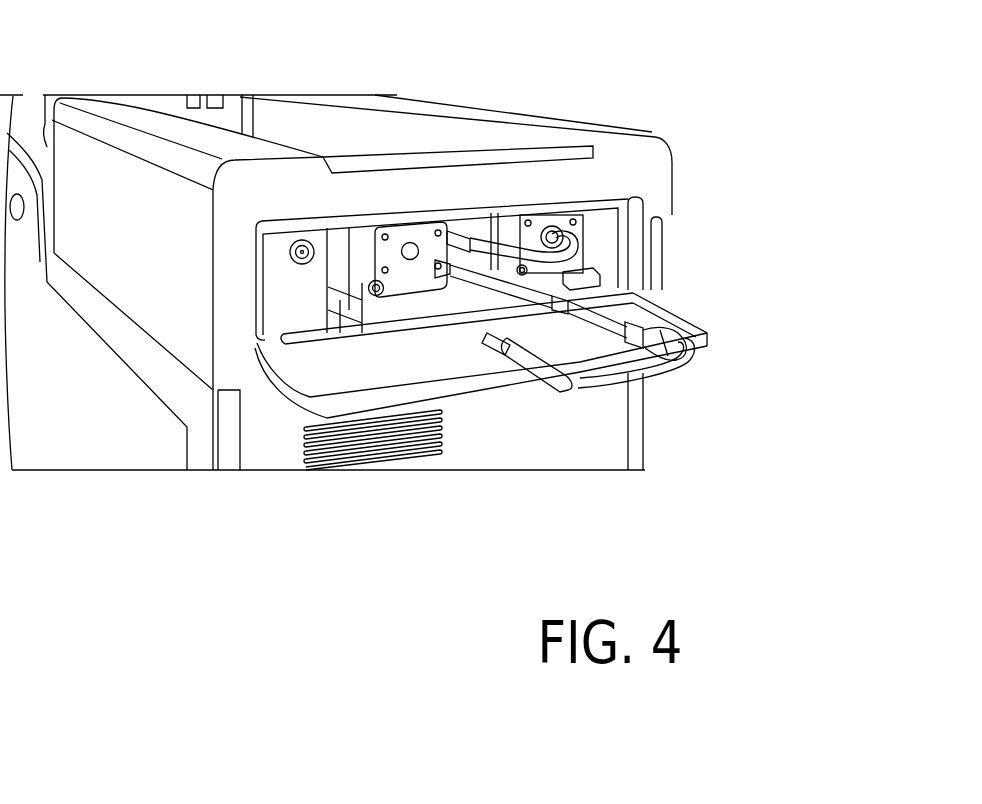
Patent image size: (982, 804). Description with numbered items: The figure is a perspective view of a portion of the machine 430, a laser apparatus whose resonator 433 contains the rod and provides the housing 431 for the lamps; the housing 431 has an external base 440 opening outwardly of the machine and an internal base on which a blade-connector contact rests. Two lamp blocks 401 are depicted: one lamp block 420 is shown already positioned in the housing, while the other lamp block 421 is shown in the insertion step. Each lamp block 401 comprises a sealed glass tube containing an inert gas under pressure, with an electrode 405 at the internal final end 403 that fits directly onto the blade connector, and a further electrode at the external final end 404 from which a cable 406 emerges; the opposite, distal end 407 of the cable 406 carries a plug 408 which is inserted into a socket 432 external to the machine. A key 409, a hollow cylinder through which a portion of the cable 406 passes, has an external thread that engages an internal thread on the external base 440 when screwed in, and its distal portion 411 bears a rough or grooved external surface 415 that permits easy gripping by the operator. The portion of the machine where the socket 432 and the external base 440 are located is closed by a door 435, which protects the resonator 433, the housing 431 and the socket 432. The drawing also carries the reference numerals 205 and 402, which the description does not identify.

The printing system 205 is at (331, 238).
The machine 430 is at (283, 84).
The resonator 433 is at (366, 252).
The external base 440 is at (426, 233).
The housing 431 is at (410, 233).
The plug 408 is at (476, 222).
The cable 406 is at (533, 240).
The lamp block 420 is at (552, 218).
The lamp block 401 is at (585, 232).
The lamp block 421 is at (568, 291).
The electrode 405 is at (432, 276).
The internal final end 403 is at (447, 284).
The key 409 is at (632, 318).
The external final end 404 is at (571, 335).
The rough or grooved external surface 415 is at (672, 322).
The distal portion 411 is at (697, 351).
The distal end 407 is at (562, 403).
The shelf 402 is at (500, 302).
The door 435 is at (375, 397).
The socket 432 is at (366, 299).